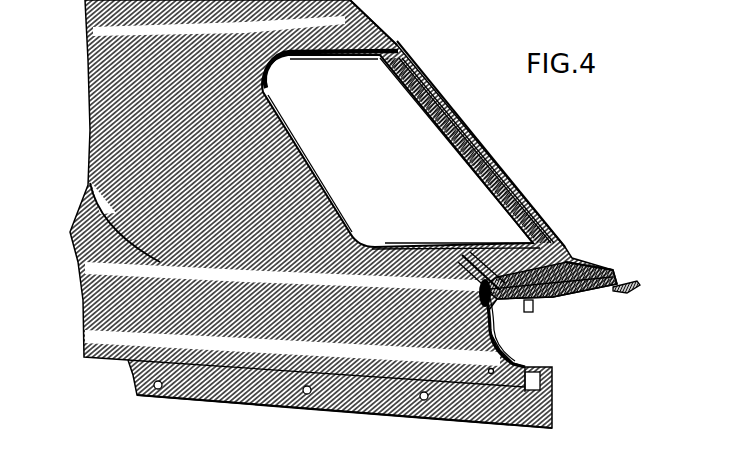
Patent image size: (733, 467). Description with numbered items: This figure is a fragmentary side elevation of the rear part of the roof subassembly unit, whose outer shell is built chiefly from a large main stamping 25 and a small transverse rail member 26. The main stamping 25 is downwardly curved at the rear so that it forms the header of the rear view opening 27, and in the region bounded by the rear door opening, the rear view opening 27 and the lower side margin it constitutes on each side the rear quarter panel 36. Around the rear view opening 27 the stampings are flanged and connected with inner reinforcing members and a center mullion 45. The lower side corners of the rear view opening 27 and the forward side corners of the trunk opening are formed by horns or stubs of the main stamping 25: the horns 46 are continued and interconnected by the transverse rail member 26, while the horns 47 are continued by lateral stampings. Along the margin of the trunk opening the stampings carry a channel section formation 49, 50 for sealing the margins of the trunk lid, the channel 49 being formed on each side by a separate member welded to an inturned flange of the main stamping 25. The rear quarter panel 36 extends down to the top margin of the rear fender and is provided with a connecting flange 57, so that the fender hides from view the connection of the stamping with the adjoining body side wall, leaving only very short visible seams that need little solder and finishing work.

The main stamping 25 is at (372, 14).
The transverse rail member 26 is at (601, 262).
The rear view opening 27 is at (384, 159).
The rear quarter panel 36 is at (147, 132).
The center mullion 45 is at (465, 138).
The horn 46 is at (462, 283).
The horn 47 is at (490, 370).
The channel section formation 49 is at (503, 334).
The channel section formation 50 is at (625, 288).
The connecting flange 57 is at (217, 385).